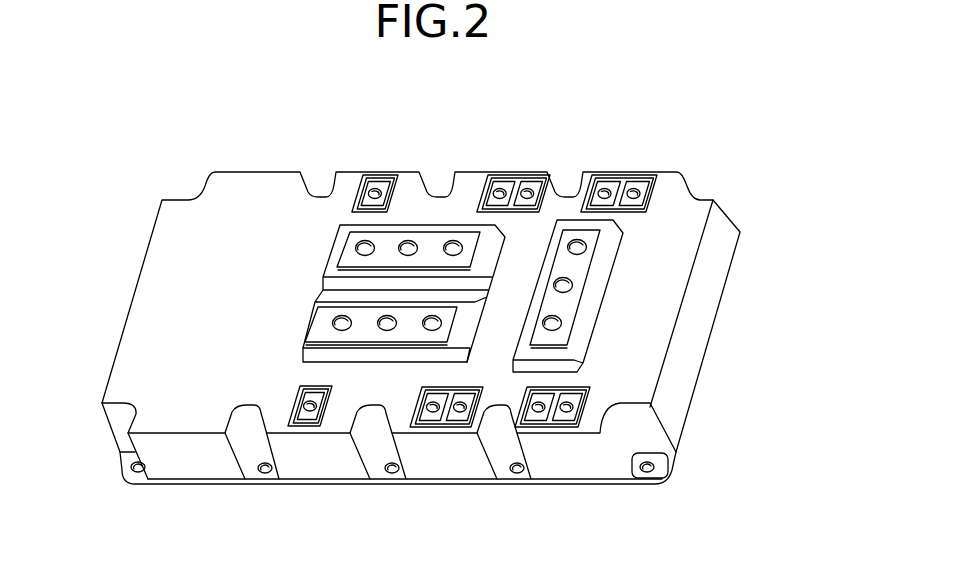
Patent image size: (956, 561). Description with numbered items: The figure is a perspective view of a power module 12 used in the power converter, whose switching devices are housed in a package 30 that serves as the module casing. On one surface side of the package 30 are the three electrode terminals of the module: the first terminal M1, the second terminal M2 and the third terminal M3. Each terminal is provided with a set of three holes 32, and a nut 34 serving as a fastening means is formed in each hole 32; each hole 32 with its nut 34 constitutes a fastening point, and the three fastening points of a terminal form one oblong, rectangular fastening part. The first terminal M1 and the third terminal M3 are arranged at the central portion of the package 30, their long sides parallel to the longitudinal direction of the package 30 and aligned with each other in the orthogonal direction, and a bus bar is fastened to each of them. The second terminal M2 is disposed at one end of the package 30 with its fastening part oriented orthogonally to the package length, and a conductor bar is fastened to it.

The power module 12 is at (465, 151).
The package 30 is at (143, 260).
The hole 32 is at (407, 240).
The nut 34 is at (555, 324).
The first terminal M1 is at (351, 243).
The second terminal M2 is at (582, 267).
The third terminal M3 is at (327, 329).